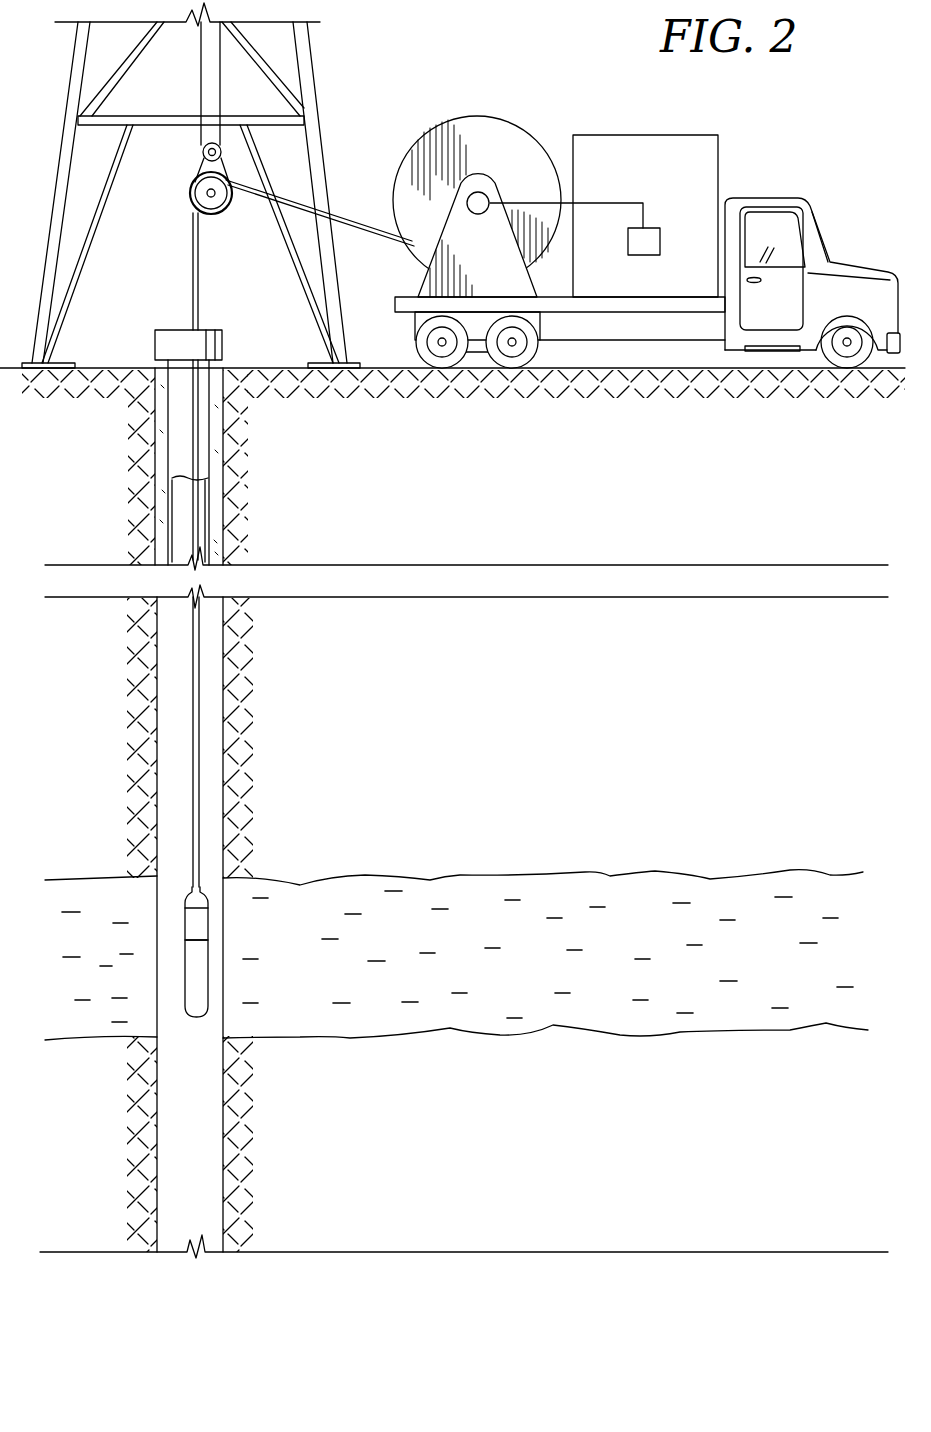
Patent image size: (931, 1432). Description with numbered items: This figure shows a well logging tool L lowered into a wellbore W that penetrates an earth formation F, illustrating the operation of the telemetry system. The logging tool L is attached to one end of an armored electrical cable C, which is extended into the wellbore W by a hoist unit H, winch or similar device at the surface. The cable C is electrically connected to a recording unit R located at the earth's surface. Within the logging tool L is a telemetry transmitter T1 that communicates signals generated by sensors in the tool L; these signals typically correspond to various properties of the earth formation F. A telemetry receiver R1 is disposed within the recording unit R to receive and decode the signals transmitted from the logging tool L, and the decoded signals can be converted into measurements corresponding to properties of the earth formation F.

The hoist unit H is at (425, 142).
The armored electrical cable C is at (350, 226).
The recording unit R is at (662, 134).
The telemetry receiver R1 is at (650, 241).
The wellbore W is at (215, 638).
The earth formation F is at (539, 970).
The telemetry transmitter T1 is at (197, 922).
The well logging tool L is at (197, 978).